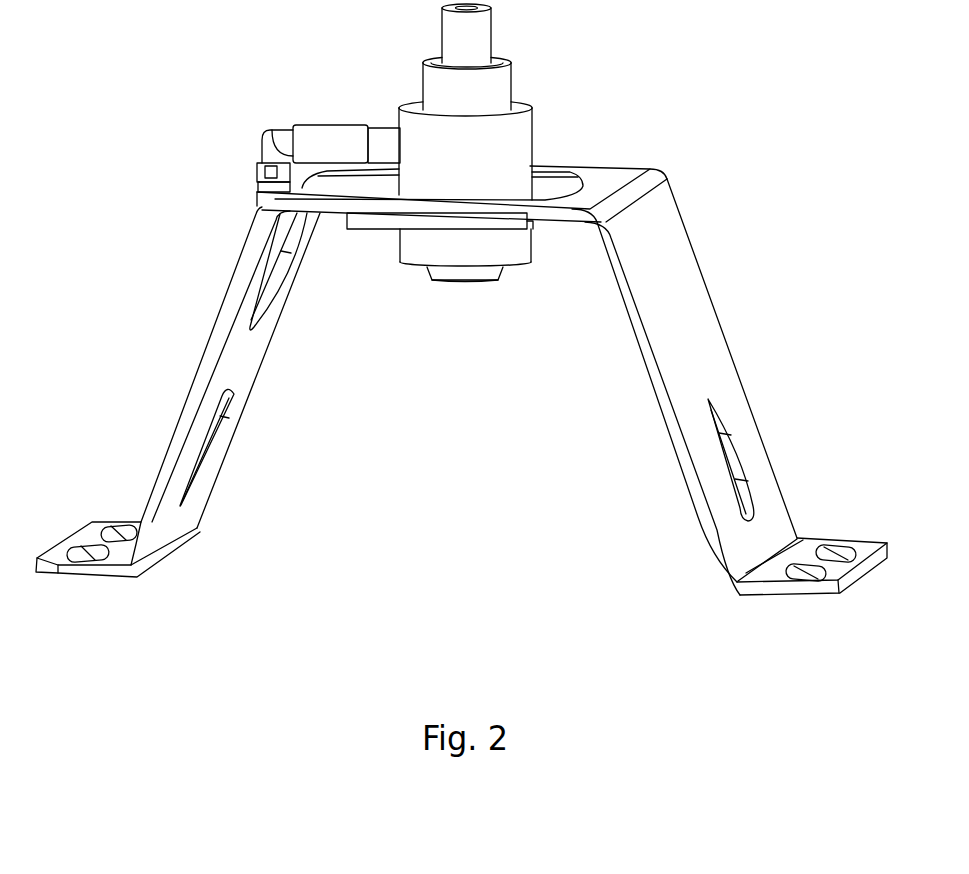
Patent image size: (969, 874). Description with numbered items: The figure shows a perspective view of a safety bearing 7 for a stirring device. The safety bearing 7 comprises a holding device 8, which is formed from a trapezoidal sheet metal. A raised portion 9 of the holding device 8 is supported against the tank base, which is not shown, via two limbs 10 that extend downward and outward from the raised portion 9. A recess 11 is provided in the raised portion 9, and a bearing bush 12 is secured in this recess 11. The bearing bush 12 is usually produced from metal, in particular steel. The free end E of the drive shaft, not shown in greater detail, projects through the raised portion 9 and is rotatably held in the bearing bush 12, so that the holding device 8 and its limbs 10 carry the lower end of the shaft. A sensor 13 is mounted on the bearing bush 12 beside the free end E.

The free end E is at (480, 32).
The safety bearing 7 is at (461, 326).
The holding device 8 is at (683, 303).
The raised portion 9 is at (622, 174).
The limbs 10 is at (737, 373).
The recess 11 is at (565, 182).
The bearing bush 12 is at (465, 242).
The sensor 13 is at (338, 138).